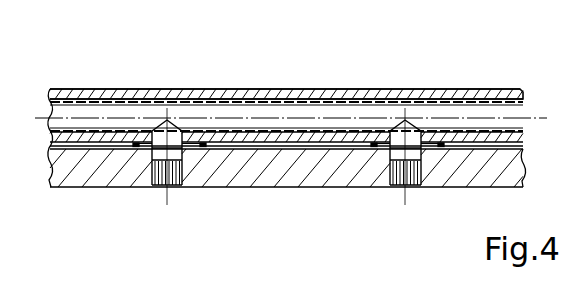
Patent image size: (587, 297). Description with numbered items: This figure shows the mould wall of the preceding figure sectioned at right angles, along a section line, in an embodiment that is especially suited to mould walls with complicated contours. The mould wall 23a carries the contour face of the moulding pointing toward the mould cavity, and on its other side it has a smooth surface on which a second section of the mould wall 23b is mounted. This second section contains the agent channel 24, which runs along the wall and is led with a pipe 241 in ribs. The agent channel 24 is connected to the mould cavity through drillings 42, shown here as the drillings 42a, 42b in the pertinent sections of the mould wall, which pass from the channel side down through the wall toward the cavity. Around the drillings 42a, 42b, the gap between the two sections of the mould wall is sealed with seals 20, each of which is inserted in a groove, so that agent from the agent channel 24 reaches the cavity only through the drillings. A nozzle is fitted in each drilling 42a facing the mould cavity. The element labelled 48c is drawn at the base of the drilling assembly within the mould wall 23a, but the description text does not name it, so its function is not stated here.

The mould wall 23a is at (76, 176).
The second section of the mould wall 23b is at (210, 89).
The agent channel 24 is at (306, 113).
The pipe 241 is at (443, 89).
The seals 20 is at (367, 146).
The drillings 42 is at (150, 152).
The drilling 42a is at (418, 153).
The drilling 42b is at (390, 153).
The clip base 48c is at (178, 186).